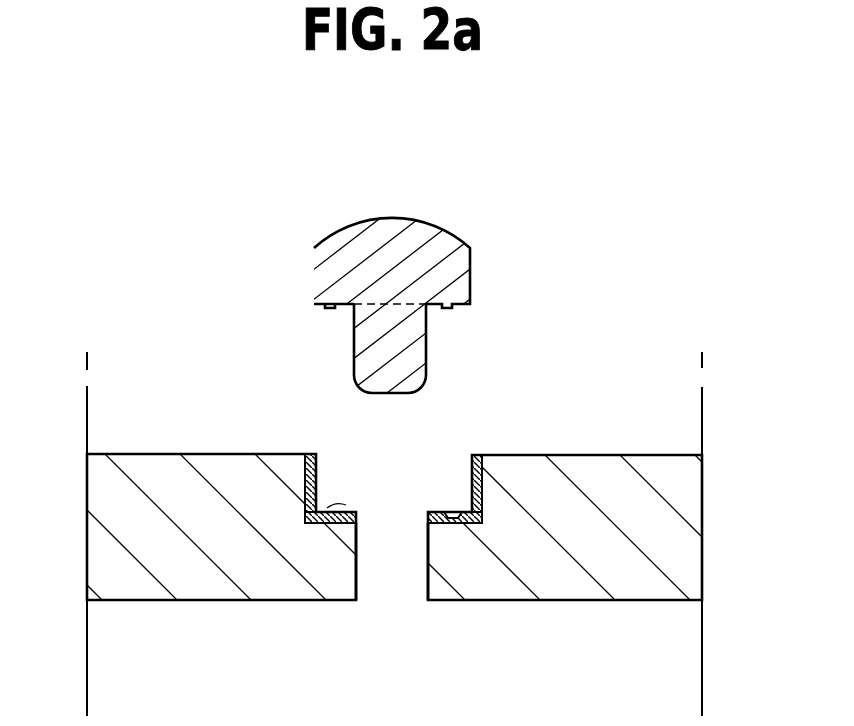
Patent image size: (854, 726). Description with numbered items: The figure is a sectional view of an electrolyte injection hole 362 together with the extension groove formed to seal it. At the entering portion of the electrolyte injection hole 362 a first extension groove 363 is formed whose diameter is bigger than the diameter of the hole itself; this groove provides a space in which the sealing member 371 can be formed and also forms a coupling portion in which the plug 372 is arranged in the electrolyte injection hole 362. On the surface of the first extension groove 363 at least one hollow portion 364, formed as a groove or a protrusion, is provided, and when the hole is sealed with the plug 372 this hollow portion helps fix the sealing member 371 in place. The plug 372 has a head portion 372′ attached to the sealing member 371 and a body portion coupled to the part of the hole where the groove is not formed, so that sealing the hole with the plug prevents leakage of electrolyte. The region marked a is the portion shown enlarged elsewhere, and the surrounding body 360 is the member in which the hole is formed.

The body / base member 360 is at (614, 473).
The electrolyte injection hole 362 is at (400, 580).
The first extension groove 363 is at (447, 473).
The hollow portion 364 is at (333, 523).
The sealing member 371 is at (482, 503).
The plug 372 is at (333, 315).
The head portion 372′ is at (353, 252).
The enlarged portion a is at (333, 518).